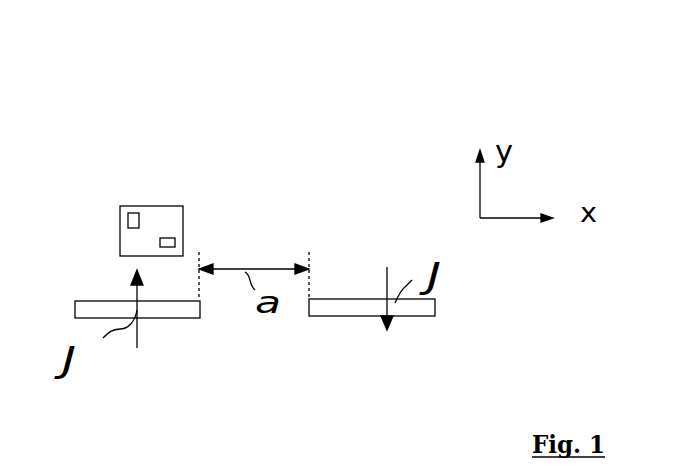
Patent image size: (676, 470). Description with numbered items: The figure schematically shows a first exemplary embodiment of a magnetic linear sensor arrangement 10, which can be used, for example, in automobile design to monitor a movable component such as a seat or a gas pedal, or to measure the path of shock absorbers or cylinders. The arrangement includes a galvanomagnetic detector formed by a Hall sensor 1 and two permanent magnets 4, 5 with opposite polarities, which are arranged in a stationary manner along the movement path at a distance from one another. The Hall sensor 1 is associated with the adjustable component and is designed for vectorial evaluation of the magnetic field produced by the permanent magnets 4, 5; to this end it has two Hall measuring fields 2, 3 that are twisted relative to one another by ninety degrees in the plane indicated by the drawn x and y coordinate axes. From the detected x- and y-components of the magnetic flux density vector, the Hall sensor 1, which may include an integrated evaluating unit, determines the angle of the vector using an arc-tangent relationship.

The magnetic linear sensor arrangement 10 is at (107, 108).
The Hall sensor 1 is at (168, 222).
The Hall measuring field 2 is at (128, 218).
The Hall measuring field 3 is at (175, 242).
The permanent magnet 4 is at (200, 318).
The permanent magnet 5 is at (403, 316).